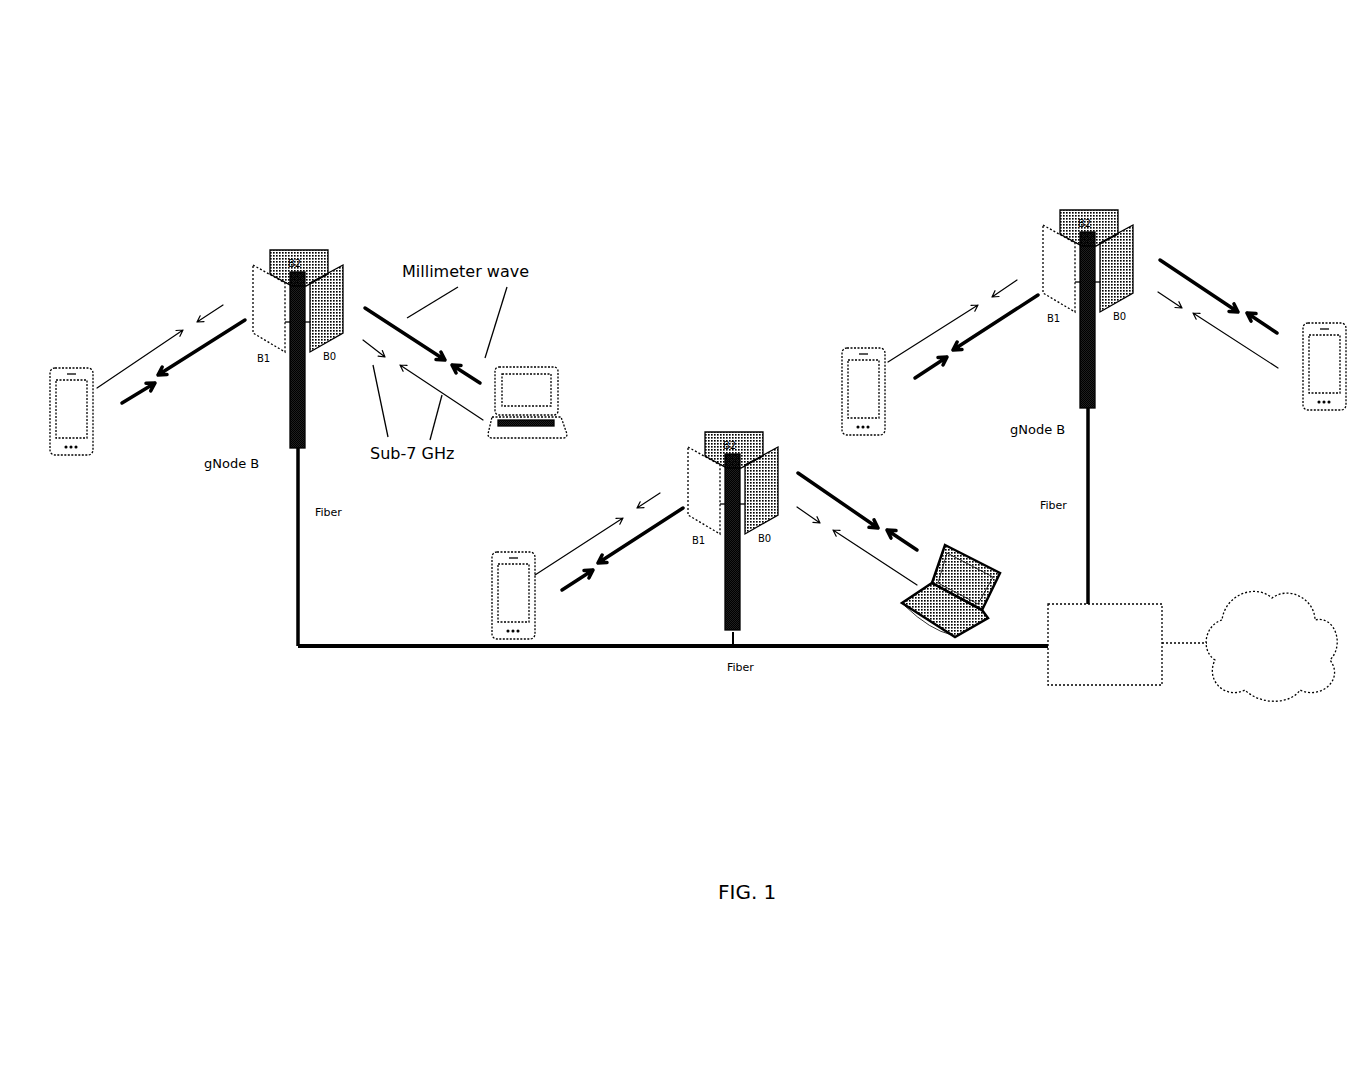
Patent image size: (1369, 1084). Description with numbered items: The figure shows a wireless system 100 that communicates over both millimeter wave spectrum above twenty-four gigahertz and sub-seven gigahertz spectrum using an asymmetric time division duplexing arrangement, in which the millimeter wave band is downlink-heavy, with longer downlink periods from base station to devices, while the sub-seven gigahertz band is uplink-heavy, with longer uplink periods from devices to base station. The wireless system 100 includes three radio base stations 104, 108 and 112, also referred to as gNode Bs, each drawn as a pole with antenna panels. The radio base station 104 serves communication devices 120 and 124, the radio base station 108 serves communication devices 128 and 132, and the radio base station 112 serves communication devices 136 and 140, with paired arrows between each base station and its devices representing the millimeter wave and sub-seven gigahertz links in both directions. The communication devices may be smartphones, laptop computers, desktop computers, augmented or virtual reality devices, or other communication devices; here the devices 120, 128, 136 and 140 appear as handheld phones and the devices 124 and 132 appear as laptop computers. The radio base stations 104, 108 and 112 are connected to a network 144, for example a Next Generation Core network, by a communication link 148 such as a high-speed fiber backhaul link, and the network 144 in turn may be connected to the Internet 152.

The wireless system 100 is at (750, 153).
The radio base station 104 is at (282, 250).
The radio base station 108 is at (725, 432).
The radio base station 112 is at (1102, 225).
The communication device 120 is at (93, 445).
The communication device 124 is at (542, 395).
The communication device 128 is at (490, 585).
The communication device 132 is at (970, 567).
The communication device 136 is at (852, 357).
The communication device 140 is at (1313, 407).
The network 144 is at (1105, 687).
The communication link 148 is at (408, 649).
The Internet 152 is at (1263, 698).